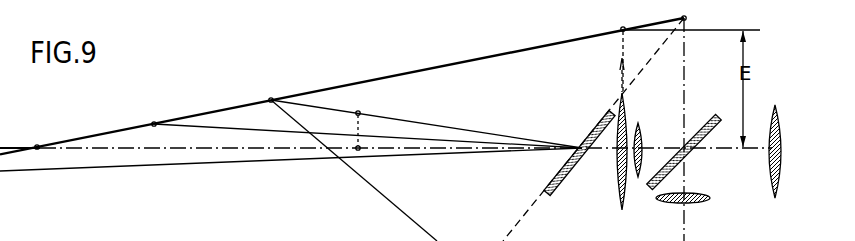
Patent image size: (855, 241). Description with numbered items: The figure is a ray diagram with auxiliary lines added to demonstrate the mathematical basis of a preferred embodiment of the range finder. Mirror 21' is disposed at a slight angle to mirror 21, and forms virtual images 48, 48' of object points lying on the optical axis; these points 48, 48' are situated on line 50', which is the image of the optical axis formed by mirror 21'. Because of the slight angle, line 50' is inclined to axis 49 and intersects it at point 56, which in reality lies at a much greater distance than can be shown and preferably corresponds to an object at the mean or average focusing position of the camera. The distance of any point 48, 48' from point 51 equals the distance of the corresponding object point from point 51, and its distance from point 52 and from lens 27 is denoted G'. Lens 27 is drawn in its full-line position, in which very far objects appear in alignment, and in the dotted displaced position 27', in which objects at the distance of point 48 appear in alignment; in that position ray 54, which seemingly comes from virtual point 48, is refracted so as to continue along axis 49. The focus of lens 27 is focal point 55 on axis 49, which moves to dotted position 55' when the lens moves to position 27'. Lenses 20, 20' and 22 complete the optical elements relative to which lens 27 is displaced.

The lens 20 is at (683, 217).
The lens 20' is at (651, 137).
The mirror 21 is at (684, 151).
The mirror 21' is at (579, 158).
The lens 22 is at (772, 178).
The lens 27 is at (612, 167).
The dotted position of lens 27' is at (603, 71).
The virtual image point 48 is at (281, 85).
The virtual image point 48' is at (162, 107).
The axis 49 is at (257, 150).
The image line of optical axis 50' is at (342, 86).
The point 51 is at (688, 18).
The point 52 is at (621, 28).
The ray 54 is at (488, 132).
The focal point 55 is at (377, 165).
The dotted position of focal point 55' is at (375, 113).
The intersection point 56 is at (38, 145).